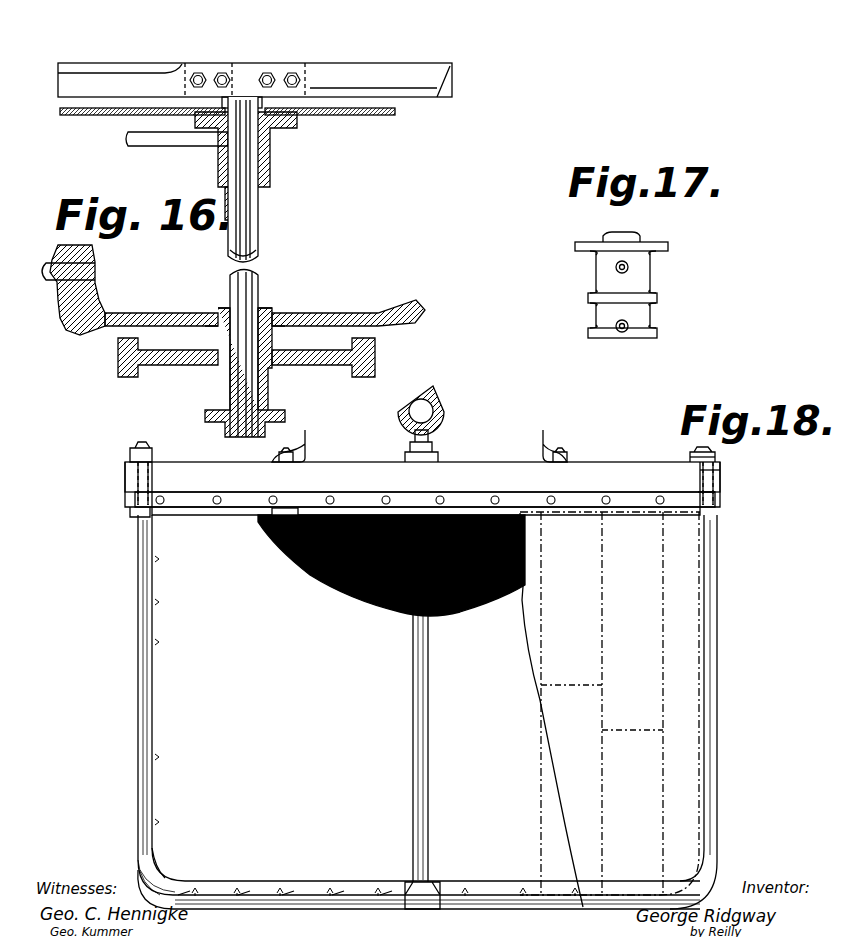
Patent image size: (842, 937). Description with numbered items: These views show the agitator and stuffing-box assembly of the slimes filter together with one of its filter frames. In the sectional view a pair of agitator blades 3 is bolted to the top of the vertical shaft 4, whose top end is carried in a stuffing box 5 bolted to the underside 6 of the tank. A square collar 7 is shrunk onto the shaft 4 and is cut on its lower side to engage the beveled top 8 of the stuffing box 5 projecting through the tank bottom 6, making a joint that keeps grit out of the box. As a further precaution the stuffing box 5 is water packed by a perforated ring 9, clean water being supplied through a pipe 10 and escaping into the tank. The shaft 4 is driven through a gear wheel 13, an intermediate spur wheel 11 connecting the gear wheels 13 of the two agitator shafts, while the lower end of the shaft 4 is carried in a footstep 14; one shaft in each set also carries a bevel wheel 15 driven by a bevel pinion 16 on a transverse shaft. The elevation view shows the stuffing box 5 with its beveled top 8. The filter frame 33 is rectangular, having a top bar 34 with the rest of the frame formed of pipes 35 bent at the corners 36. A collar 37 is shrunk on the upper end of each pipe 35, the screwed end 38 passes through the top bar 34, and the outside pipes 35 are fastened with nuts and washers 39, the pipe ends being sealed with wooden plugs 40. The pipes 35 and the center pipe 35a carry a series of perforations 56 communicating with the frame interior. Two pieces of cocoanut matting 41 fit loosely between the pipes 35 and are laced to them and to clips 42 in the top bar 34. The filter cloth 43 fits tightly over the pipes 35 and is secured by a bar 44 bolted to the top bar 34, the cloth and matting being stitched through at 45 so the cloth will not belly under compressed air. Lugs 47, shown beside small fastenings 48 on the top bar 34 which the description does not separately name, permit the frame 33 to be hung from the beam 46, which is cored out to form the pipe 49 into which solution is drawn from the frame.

In FIG. 16, the agitator blades 3 is at (255, 80).
In FIG. 16, the vertical shaft 4 is at (256, 278).
In FIG. 16, the stuffing box 5 is at (270, 162).
In FIG. 17, the stuffing box 5 is at (643, 278).
In FIG. 16, the underside of the tank 6 is at (390, 126).
In FIG. 16, the square collar 7 is at (262, 100).
In FIG. 16, the beveled top 8 is at (236, 103).
In FIG. 17, the beveled top 8 is at (633, 236).
In FIG. 16, the perforated ring 9 is at (238, 150).
In FIG. 16, the pipe 10 is at (150, 135).
In FIG. 16, the intermediate spur wheel 11 is at (97, 270).
In FIG. 16, the gear wheels 13 is at (335, 369).
In FIG. 16, the footsteps 14 is at (226, 430).
In FIG. 16, the bevel wheel 15 is at (265, 310).
In FIG. 16, the bevel pinion 16 is at (98, 292).
In FIG. 18, the filter frames 33 is at (293, 711).
In FIG. 18, the top bar 34 is at (422, 484).
In FIG. 18, the pipes 35 is at (322, 878).
In FIG. 18, the center pipe 35a is at (430, 722).
In FIG. 18, the corners 36 is at (722, 886).
In FIG. 18, the collar 37 is at (735, 510).
In FIG. 18, the pipe end 38 is at (700, 449).
In FIG. 18, the nuts and washers 39 is at (716, 455).
In FIG. 18, the wooden plugs 40 is at (718, 472).
In FIG. 18, the cocoanut matting 41 is at (480, 622).
In FIG. 18, the clips 42 is at (270, 522).
In FIG. 18, the filter cloth 43 is at (570, 492).
In FIG. 18, the bar 44 is at (486, 498).
In FIG. 18, the stitching 45 is at (602, 708).
In FIG. 18, the beam 46 is at (436, 405).
In FIG. 18, the lugs 47 is at (558, 440).
In FIG. 18, the bolt 48 is at (570, 455).
In FIG. 18, the pipe 49 is at (421, 411).
In FIG. 18, the perforations 56 is at (285, 893).